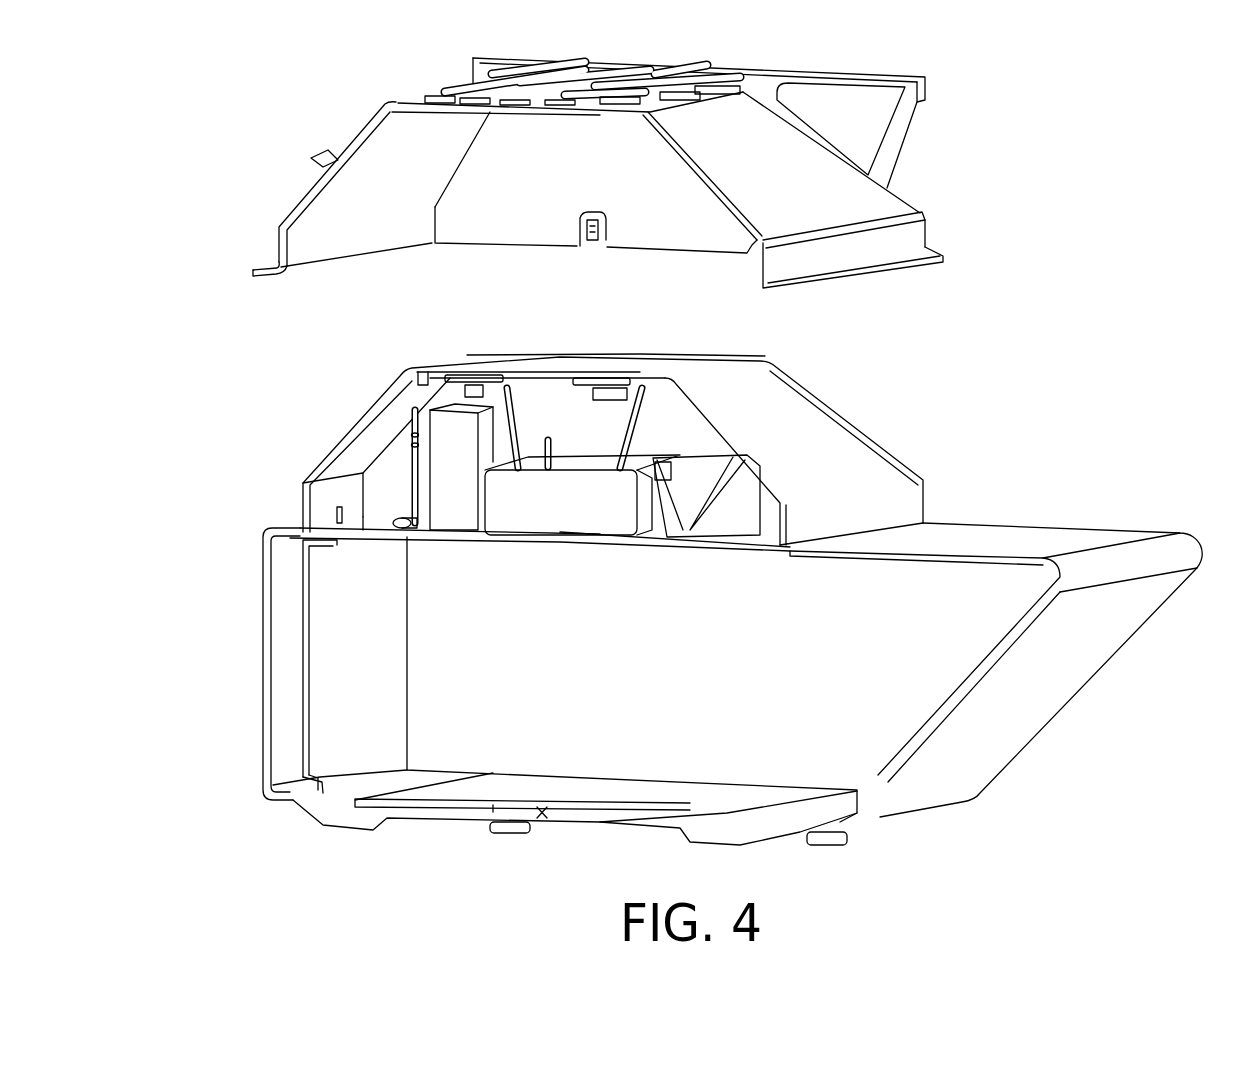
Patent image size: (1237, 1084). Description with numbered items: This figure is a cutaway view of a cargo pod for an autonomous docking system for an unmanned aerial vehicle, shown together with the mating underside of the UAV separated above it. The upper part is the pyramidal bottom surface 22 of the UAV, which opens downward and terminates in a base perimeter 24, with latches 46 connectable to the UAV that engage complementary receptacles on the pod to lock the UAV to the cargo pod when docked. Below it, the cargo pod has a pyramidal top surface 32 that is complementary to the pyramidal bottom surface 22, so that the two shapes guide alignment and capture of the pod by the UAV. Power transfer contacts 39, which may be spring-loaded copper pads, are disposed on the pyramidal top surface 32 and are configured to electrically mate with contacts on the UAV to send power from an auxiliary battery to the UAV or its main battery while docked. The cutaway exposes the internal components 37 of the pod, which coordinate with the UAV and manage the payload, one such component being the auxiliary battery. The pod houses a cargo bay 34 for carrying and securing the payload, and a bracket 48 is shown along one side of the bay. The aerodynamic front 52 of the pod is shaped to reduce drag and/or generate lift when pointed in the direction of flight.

The pyramidal bottom surface 22 is at (882, 203).
The base perimeter 24 is at (300, 270).
The latch 46 is at (362, 190).
The pyramidal top surface 32 is at (803, 427).
The power transfer contact 39 is at (590, 382).
The internal components 37 is at (368, 478).
The cargo bay 34 is at (540, 738).
The channel bracket 48 is at (298, 700).
The aerodynamic front 52 is at (1108, 606).